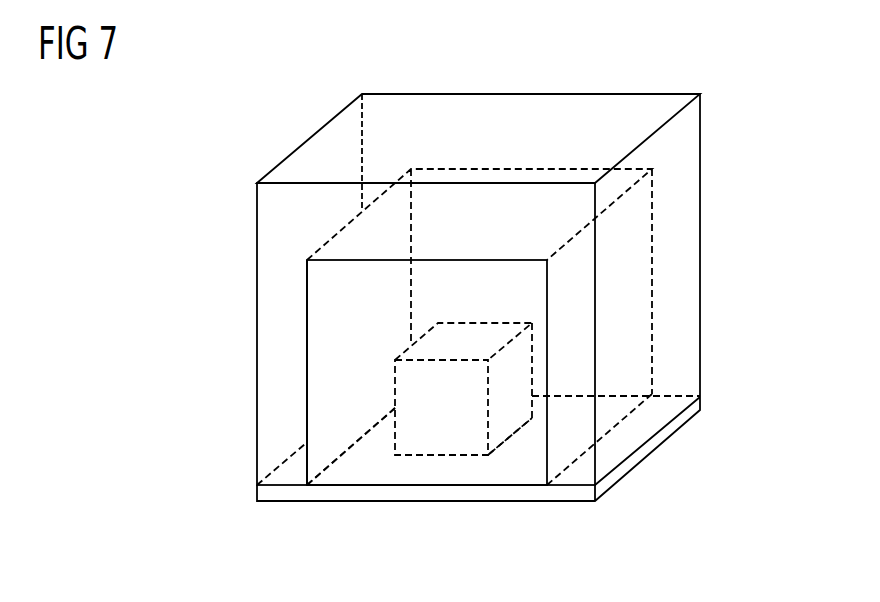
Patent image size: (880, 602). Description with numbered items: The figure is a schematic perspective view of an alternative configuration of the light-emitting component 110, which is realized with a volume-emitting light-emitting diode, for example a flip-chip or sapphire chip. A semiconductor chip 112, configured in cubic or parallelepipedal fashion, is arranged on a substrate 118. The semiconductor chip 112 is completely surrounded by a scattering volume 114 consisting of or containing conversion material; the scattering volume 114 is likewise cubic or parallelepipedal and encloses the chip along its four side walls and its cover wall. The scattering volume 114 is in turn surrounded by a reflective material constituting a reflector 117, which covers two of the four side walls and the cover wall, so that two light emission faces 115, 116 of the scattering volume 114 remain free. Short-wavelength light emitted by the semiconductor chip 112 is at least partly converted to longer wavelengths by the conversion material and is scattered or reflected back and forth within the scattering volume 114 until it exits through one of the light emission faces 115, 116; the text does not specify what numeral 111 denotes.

The light-emitting component 110 is at (203, 158).
The inner space 111 is at (518, 450).
The semiconductor chip 112 is at (443, 457).
The scattering volume 114 is at (307, 382).
The light emission face 115 is at (343, 447).
The light emission face 116 is at (627, 300).
The reflector 117 is at (680, 247).
The substrate 118 is at (632, 463).